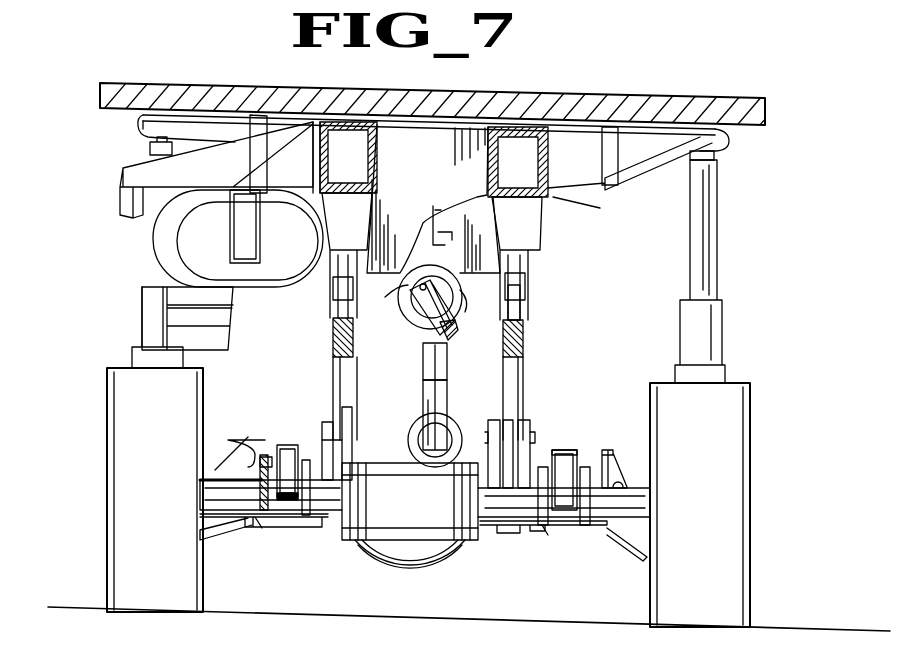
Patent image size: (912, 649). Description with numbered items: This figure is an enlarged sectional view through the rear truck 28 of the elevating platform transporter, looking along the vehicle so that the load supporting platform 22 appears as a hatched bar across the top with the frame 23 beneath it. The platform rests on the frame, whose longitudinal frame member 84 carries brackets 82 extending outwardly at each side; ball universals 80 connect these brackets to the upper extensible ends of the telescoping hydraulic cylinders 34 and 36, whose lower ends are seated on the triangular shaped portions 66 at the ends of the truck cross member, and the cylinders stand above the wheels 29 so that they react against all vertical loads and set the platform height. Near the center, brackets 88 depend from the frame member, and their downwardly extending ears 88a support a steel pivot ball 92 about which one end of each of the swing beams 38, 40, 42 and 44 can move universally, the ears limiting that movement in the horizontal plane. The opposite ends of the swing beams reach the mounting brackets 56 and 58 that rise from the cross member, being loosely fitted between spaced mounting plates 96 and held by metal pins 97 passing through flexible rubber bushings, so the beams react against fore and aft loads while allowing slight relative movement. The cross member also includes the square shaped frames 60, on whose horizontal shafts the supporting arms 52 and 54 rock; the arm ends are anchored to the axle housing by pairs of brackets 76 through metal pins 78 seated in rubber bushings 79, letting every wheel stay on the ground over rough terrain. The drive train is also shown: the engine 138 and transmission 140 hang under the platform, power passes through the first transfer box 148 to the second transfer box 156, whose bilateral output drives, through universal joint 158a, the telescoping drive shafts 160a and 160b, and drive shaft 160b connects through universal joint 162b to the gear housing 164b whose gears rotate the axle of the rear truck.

The load supporting platform 22 is at (672, 100).
The frame 23 is at (567, 195).
The rear truck 28 is at (391, 581).
The wheels 29 is at (168, 433).
The telescoping hydraulic cylinder 34 is at (719, 209).
The telescoping hydraulic cylinder 36 is at (150, 318).
The swing beam 38 is at (525, 340).
The swing beam 40 is at (335, 338).
The swing beam 42 is at (528, 367).
The swing beam 44 is at (338, 359).
The supporting arm 52 is at (560, 525).
The supporting arm 54 is at (282, 517).
The mounting bracket 56 is at (537, 420).
The mounting bracket 58 is at (360, 422).
The square shaped frame 60 is at (250, 440).
The triangular shaped portion 66 is at (218, 545).
The bracket 76 is at (258, 520).
The metal pin 78 is at (230, 467).
The rubber bushing 79 is at (205, 506).
The ball universal 80 is at (150, 149).
The bracket 82 is at (138, 127).
The longitudinal frame member 84 is at (490, 163).
The bracket 88 is at (330, 300).
The downwardly extending ears 88a is at (335, 310).
The steel pivot ball 92 is at (522, 290).
The mounting plates 96 is at (342, 410).
The metal pin 97 is at (320, 428).
The engine 138 is at (157, 278).
The transmission 140 is at (160, 253).
The first transfer box 148 is at (218, 247).
The second transfer box 156 is at (442, 306).
The universal joint 158a is at (408, 316).
The drive shaft 160a is at (423, 358).
The drive shaft 160b is at (425, 379).
The universal joint 162b is at (410, 501).
The gear housing 164b is at (420, 521).